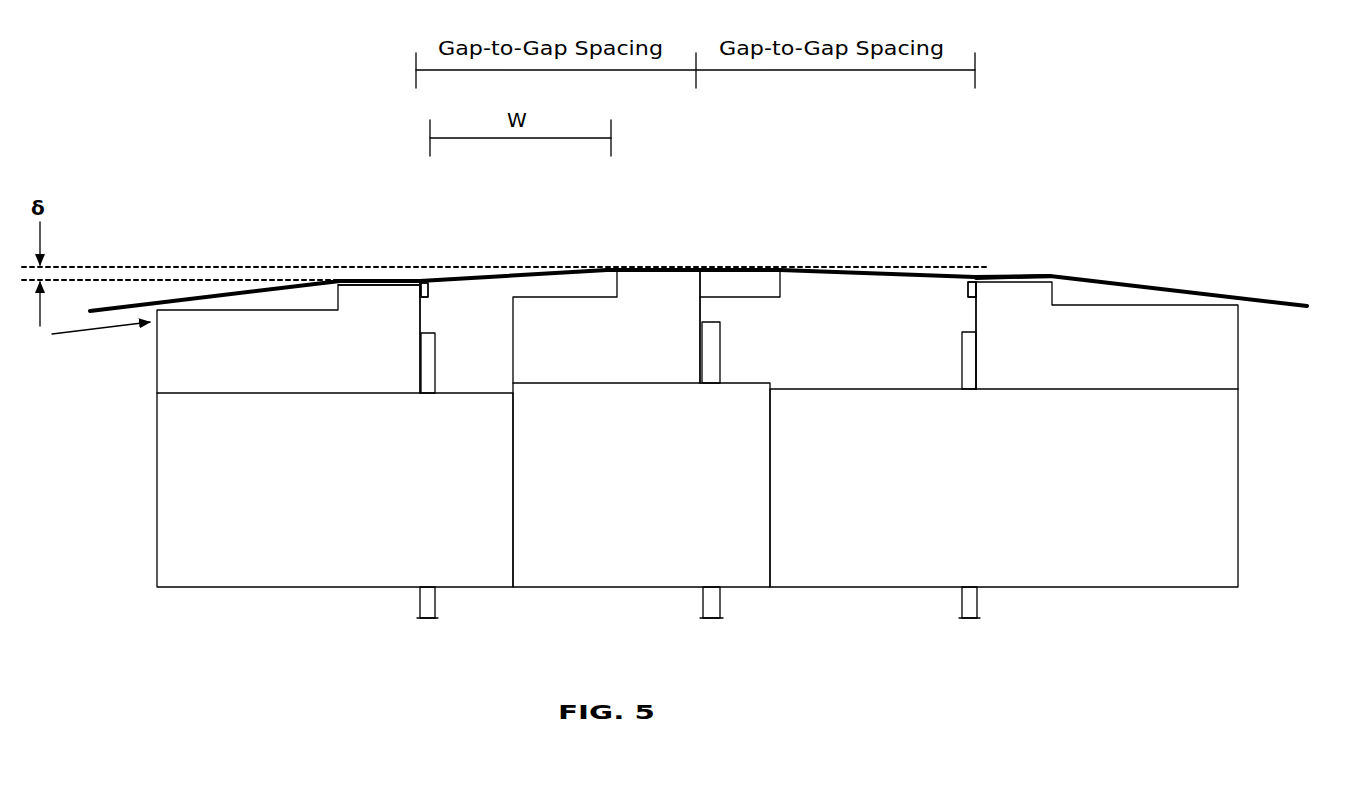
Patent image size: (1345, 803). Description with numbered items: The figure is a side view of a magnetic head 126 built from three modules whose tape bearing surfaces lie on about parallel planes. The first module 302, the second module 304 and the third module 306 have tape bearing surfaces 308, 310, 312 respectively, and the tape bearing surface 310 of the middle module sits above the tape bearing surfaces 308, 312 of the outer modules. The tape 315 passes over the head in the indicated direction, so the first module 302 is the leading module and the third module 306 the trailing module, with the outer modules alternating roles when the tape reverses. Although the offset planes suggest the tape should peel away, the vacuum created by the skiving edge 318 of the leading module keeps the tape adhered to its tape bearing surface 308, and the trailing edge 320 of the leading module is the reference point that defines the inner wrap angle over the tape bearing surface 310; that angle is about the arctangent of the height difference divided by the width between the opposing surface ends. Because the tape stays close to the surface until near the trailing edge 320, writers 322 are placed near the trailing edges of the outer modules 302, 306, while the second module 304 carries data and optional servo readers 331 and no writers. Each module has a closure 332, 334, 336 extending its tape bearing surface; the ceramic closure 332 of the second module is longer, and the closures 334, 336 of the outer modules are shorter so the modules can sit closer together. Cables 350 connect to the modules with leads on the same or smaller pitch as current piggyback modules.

The magnetic head 126 is at (322, 148).
The first module 302 is at (157, 358).
The second module 304 is at (594, 296).
The third module 306 is at (1240, 355).
The tape bearing surface 308 is at (388, 277).
The tape bearing surface 310 is at (645, 266).
The tape bearing surface 312 is at (1005, 274).
The tape 315 is at (1108, 283).
The skiving edge 318 is at (332, 291).
The trailing edge 320 is at (432, 290).
The writers 322 is at (420, 275).
The data and optional servo readers 331 is at (700, 266).
The closure 332 is at (750, 298).
The closure 334 is at (430, 297).
The closure 336 is at (965, 288).
The cables 350 is at (436, 602).